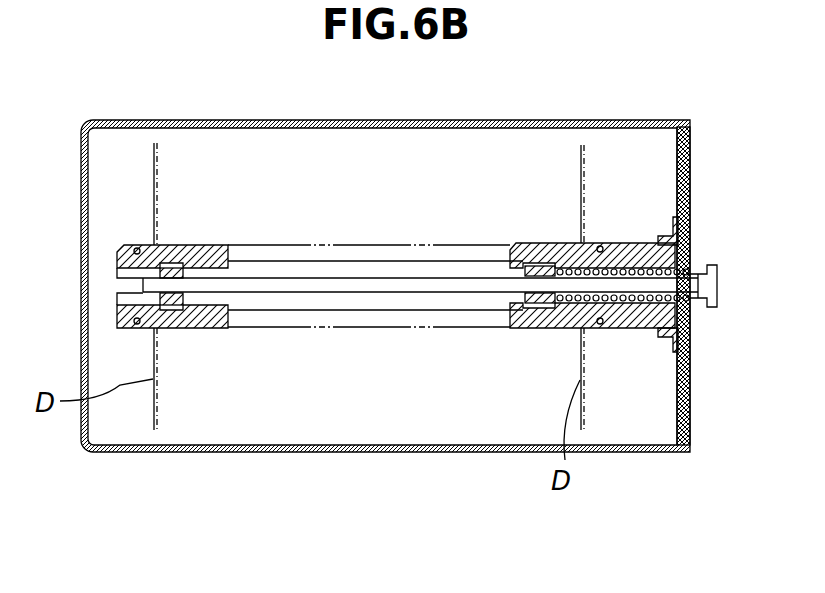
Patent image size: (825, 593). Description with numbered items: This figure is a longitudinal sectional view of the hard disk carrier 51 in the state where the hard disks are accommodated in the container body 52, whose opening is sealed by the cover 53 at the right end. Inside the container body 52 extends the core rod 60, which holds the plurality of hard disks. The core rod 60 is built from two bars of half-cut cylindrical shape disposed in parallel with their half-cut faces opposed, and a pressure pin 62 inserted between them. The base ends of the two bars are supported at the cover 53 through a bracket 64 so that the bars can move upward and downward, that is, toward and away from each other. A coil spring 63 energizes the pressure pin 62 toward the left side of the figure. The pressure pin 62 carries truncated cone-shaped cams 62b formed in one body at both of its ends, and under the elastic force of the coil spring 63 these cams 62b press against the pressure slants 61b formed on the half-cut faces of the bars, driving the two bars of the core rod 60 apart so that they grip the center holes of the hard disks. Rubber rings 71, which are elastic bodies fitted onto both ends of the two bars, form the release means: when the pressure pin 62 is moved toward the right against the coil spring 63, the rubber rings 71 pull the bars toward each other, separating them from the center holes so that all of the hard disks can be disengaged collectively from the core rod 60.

The hard disk carrier 51 is at (449, 246).
The container body 52 is at (338, 120).
The cover 53 is at (727, 107).
The core rod 60 is at (368, 247).
The pressure slant 61b is at (203, 265).
The pressure pin 62 is at (370, 294).
The truncated cone-shaped cam 62b is at (178, 328).
The coil spring 63 is at (643, 262).
The bracket 64 is at (677, 226).
The rubber ring 71 is at (137, 248).